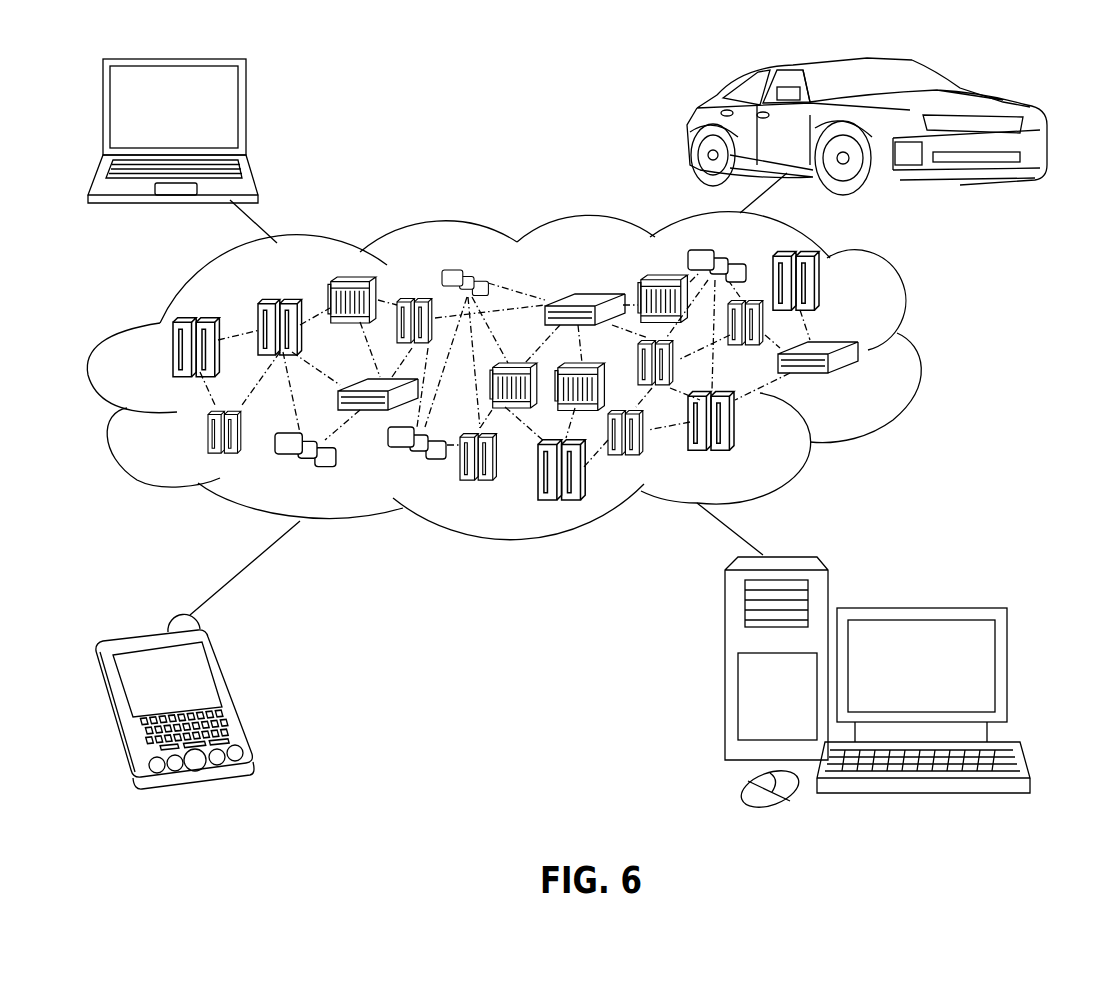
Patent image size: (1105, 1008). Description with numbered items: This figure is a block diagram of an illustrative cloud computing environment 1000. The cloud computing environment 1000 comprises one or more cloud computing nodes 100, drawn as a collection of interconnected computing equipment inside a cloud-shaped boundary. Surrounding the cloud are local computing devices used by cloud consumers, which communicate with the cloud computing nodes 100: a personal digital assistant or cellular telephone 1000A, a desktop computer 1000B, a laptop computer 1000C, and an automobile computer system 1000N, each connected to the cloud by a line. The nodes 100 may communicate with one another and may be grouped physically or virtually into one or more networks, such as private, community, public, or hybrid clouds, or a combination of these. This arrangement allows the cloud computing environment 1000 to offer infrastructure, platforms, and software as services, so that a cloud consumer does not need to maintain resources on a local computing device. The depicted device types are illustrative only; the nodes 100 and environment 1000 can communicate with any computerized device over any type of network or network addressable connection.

The cloud computing environment 1000 is at (920, 355).
The cloud computing nodes 100 is at (876, 384).
The laptop computer 1000C is at (253, 112).
The automobile computer system 1000N is at (690, 128).
The personal digital assistant (PDA) or cellular telephone 1000A is at (233, 693).
The desktop computer 1000B is at (918, 607).